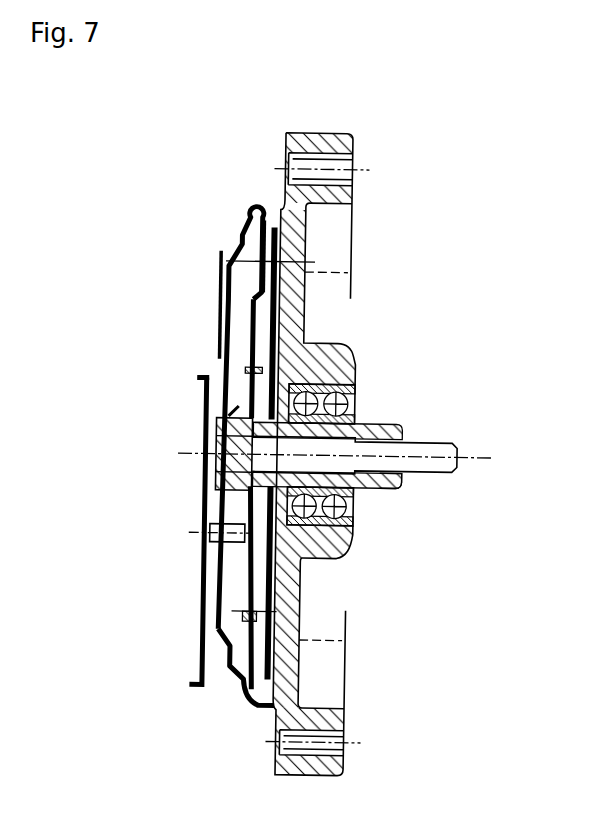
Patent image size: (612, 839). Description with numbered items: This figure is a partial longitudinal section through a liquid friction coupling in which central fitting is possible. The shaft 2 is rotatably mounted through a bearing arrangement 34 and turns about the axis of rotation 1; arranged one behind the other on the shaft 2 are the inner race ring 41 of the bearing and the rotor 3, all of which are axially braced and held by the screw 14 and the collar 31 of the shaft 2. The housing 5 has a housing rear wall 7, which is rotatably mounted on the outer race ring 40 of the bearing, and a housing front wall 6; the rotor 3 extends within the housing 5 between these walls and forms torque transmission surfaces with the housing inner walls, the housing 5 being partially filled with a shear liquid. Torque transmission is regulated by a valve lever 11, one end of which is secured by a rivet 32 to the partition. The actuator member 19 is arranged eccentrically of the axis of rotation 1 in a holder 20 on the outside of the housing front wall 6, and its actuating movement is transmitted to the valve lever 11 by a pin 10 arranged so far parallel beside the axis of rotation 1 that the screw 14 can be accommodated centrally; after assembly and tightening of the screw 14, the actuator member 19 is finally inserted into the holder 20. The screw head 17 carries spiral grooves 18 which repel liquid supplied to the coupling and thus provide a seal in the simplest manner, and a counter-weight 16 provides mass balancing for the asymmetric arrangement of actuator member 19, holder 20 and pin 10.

The axis of rotation 1 is at (484, 459).
The shaft 2 is at (400, 488).
The rotor 3 is at (272, 660).
The housing 5 is at (207, 122).
The housing front wall 6 is at (238, 236).
The housing rear wall 7 is at (273, 195).
The pin 10 is at (200, 535).
The valve lever 11 is at (252, 308).
The screw 14 is at (440, 450).
The counter-weight 16 is at (220, 258).
The screw head 17 is at (197, 478).
The spiral grooves 18 is at (205, 443).
The actuator member 19 is at (204, 426).
The holder 20 is at (212, 373).
The collar 31 is at (284, 390).
The rivet 32 is at (247, 648).
The bearing arrangement 34 is at (370, 410).
The outer race ring 40 is at (327, 560).
The inner race ring 41 is at (372, 494).